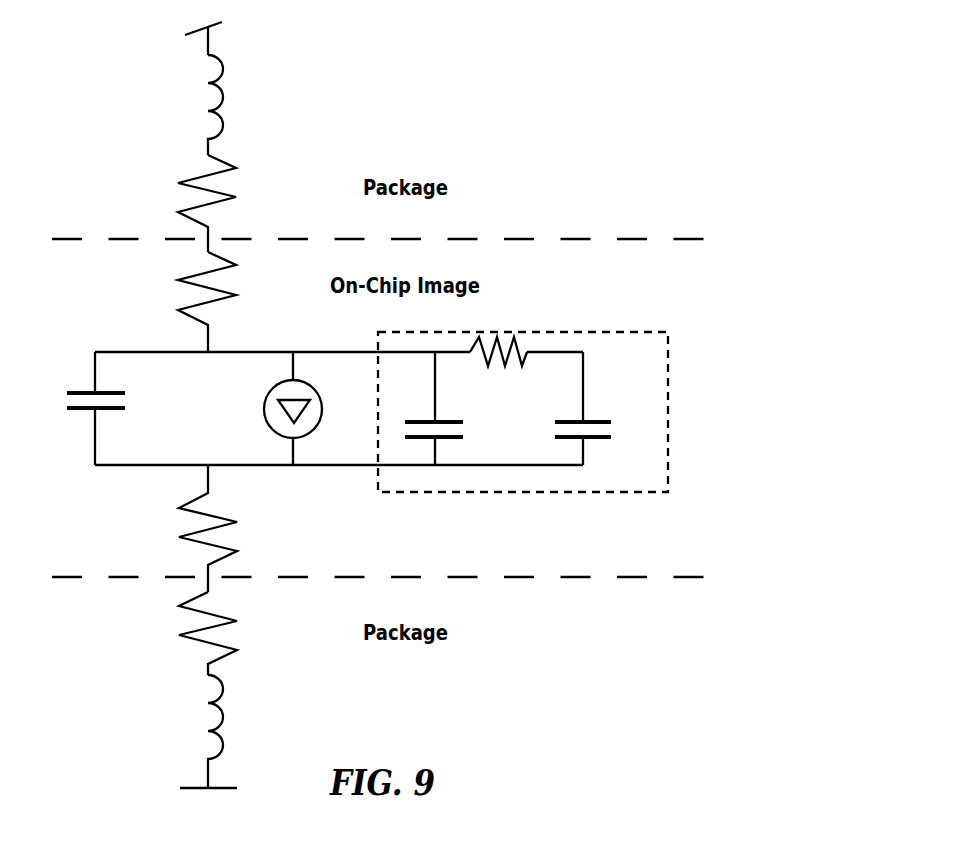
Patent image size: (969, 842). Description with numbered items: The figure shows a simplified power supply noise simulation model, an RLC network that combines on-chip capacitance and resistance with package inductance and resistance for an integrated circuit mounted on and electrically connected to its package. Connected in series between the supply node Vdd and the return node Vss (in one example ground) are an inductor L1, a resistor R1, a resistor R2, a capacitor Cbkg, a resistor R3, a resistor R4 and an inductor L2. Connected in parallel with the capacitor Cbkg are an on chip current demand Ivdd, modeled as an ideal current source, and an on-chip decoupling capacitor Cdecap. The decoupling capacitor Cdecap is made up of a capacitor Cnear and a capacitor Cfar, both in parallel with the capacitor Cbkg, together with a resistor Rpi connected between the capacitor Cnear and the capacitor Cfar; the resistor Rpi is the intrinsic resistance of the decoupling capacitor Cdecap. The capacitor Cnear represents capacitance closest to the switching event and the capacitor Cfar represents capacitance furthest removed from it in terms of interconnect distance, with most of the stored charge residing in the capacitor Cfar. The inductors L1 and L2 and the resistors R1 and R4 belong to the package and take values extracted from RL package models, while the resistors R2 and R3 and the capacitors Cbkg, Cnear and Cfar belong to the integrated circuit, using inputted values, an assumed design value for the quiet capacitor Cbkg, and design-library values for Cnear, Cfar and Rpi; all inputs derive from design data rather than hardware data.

The element Vdd is at (202, 27).
The inductor L1 is at (235, 105).
The resistor R1 is at (224, 203).
The resistor R2 is at (224, 302).
The capacitor Cbkg is at (117, 408).
The on chip current demand Ivdd is at (310, 408).
The resistor Rpi is at (498, 364).
The capacitor Cnear is at (452, 408).
The capacitor Cfar is at (594, 408).
The decoupling capacitor Cdecap is at (523, 412).
The resistor R3 is at (225, 528).
The resistor R4 is at (225, 633).
The inductor L2 is at (232, 731).
The element Vss is at (208, 804).